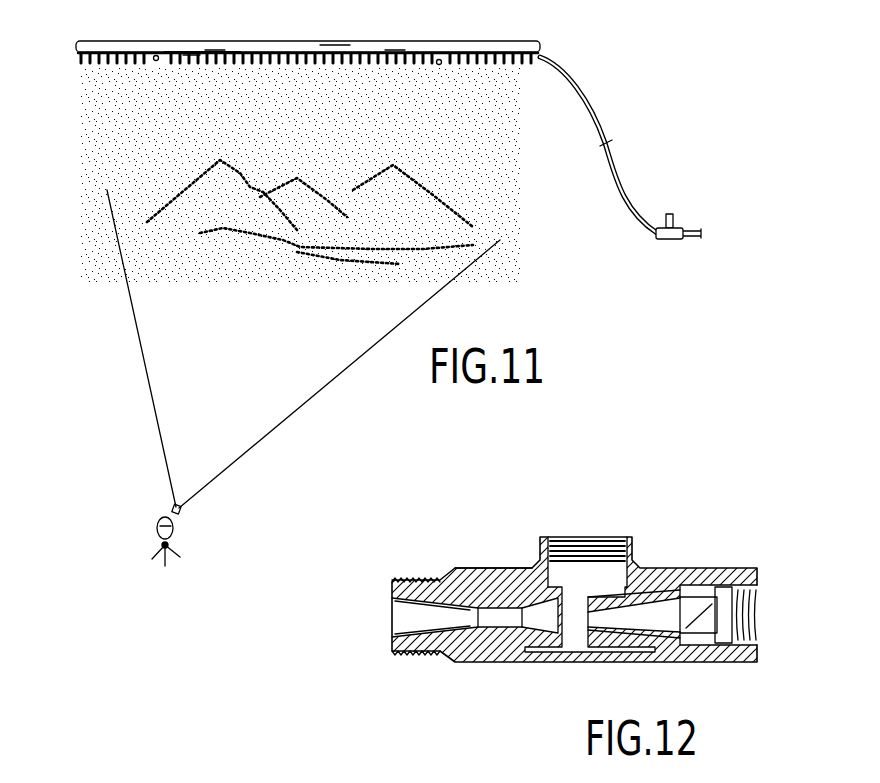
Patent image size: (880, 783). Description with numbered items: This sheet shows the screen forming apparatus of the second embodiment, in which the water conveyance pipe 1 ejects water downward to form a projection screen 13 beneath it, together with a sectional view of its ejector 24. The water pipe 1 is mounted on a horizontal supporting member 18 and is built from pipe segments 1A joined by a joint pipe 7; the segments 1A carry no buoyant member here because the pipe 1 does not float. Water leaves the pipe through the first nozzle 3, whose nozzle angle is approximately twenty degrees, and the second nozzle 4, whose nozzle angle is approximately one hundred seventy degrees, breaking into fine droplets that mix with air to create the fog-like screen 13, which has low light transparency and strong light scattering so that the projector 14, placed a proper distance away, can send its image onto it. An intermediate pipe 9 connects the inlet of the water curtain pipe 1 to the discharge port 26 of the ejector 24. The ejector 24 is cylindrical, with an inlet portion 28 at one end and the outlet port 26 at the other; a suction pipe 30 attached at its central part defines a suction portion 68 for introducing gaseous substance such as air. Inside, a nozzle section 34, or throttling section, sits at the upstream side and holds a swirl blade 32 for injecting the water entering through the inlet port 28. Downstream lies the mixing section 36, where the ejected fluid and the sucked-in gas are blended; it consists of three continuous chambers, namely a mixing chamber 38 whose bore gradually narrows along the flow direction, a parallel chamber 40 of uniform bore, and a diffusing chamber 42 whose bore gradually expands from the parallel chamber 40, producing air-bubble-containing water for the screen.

In FIG. 11, the water conveyance pipe 1 is at (500, 48).
In FIG. 11, the pipe segment 1A is at (212, 50).
In FIG. 11, the first nozzle 3 is at (178, 52).
In FIG. 11, the second nozzle 4 is at (189, 54).
In FIG. 11, the joint pipe 7 is at (156, 53).
In FIG. 11, the intermediate pipe 9 is at (600, 118).
In FIG. 11, the projection screen 13 is at (115, 156).
In FIG. 11, the projector 14 is at (175, 533).
In FIG. 11, the horizontal supporting member 18 is at (348, 20).
In FIG. 11, the ejector 24 is at (675, 230).
In FIG. 12, the ejector 24 is at (679, 552).
In FIG. 11, the discharge port 26 is at (652, 238).
In FIG. 12, the discharge port 26 is at (392, 617).
In FIG. 12, the inlet portion 28 is at (758, 626).
In FIG. 11, the suction pipe 30 is at (667, 217).
In FIG. 12, the suction pipe 30 is at (541, 556).
In FIG. 12, the swirl blade 32 is at (702, 608).
In FIG. 12, the nozzle section 34 is at (643, 618).
In FIG. 12, the mixing section 36 is at (486, 566).
In FIG. 12, the mixing chamber 38 is at (544, 620).
In FIG. 12, the parallel chamber 40 is at (498, 626).
In FIG. 12, the diffusing chamber 42 is at (425, 622).
In FIG. 12, the suction portion 68 is at (590, 541).